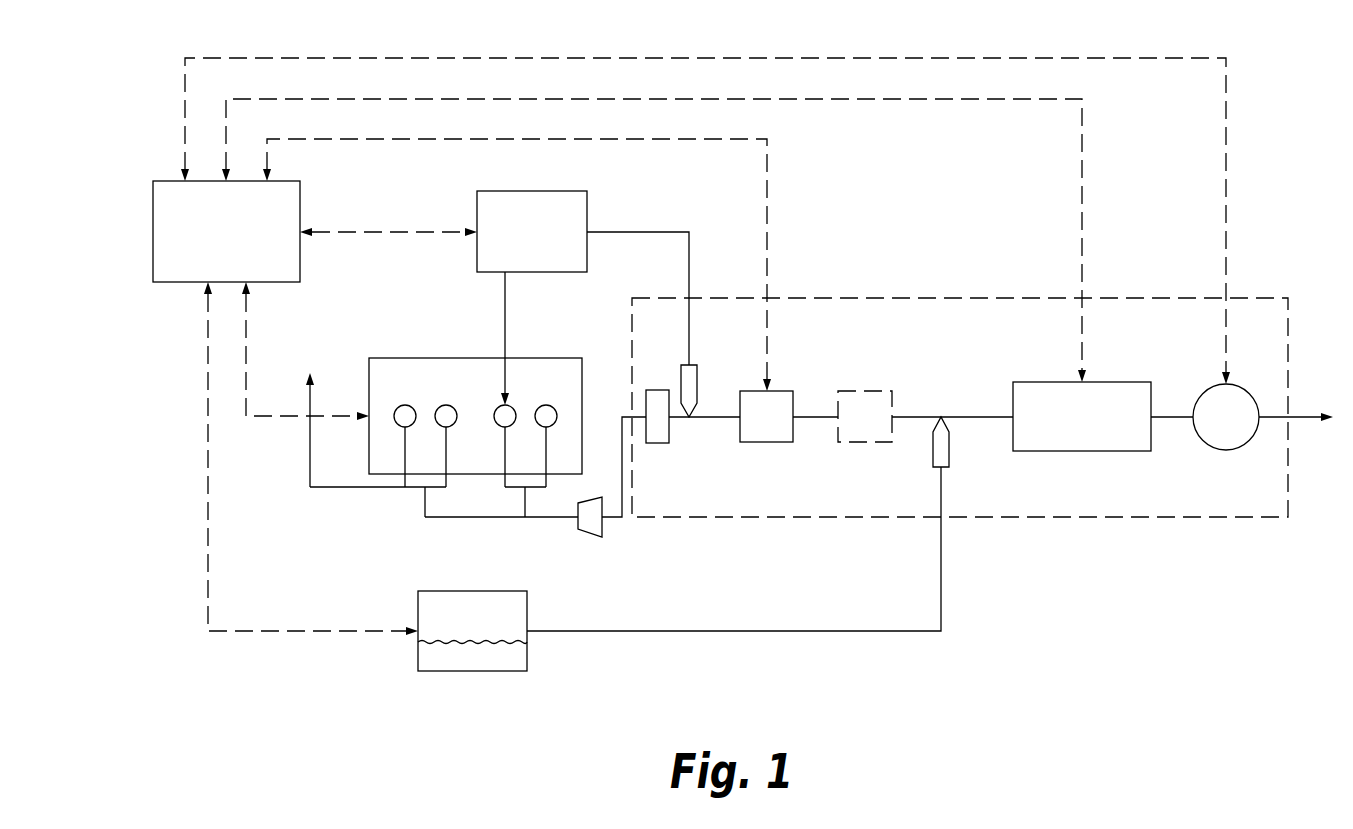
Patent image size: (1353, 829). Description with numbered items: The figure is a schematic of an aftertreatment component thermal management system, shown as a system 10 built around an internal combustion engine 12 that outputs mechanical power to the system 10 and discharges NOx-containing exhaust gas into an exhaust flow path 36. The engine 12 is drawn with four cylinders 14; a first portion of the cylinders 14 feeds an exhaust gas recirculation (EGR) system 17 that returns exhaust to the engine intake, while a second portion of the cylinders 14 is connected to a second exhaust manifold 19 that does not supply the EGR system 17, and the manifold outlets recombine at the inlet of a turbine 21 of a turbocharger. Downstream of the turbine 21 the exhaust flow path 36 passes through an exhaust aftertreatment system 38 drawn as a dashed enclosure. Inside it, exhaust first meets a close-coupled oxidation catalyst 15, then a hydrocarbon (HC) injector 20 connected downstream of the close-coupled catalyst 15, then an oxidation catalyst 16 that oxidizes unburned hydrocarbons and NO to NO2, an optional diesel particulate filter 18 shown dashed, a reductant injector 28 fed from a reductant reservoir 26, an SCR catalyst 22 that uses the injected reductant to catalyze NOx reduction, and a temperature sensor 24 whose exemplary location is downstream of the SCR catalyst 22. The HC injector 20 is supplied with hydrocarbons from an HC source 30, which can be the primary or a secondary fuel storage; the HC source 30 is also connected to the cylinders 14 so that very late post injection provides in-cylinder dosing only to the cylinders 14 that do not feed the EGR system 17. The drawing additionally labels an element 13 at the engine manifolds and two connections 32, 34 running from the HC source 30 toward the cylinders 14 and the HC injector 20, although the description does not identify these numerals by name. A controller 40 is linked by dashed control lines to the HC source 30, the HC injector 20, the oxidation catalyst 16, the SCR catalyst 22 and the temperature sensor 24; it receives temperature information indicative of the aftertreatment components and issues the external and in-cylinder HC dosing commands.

The system 10 is at (1230, 610).
The internal combustion engine 12 is at (535, 357).
The intake manifold 13 is at (413, 489).
The cylinders 14 is at (396, 406).
The close-coupled oxidation catalyst 15 is at (663, 443).
The oxidation catalyst 16 is at (783, 391).
The exhaust gas recirculation (EGR) system 17 is at (310, 458).
The diesel particulate filter 18 is at (867, 391).
The second exhaust manifold 19 is at (525, 495).
The hydrocarbon (HC) injector 20 is at (697, 392).
The turbine 21 is at (595, 537).
The SCR catalyst 22 is at (1097, 432).
The temperature sensor 24 is at (1250, 441).
The reductant reservoir 26 is at (473, 671).
The reductant injector 28 is at (950, 447).
The HC source 30 is at (477, 203).
The fuel supply line 32 is at (505, 318).
The hydrocarbon dosing line 34 is at (642, 232).
The exhaust flow path 36 is at (622, 460).
The exhaust aftertreatment system 38 is at (1139, 517).
The controller 40 is at (241, 246).